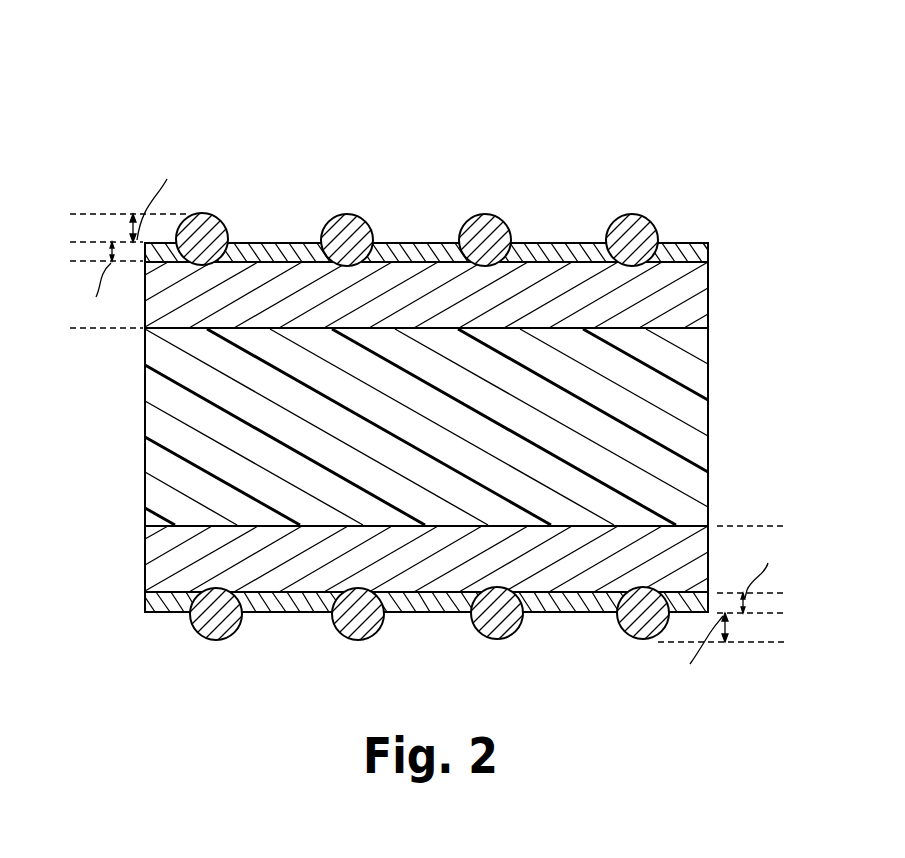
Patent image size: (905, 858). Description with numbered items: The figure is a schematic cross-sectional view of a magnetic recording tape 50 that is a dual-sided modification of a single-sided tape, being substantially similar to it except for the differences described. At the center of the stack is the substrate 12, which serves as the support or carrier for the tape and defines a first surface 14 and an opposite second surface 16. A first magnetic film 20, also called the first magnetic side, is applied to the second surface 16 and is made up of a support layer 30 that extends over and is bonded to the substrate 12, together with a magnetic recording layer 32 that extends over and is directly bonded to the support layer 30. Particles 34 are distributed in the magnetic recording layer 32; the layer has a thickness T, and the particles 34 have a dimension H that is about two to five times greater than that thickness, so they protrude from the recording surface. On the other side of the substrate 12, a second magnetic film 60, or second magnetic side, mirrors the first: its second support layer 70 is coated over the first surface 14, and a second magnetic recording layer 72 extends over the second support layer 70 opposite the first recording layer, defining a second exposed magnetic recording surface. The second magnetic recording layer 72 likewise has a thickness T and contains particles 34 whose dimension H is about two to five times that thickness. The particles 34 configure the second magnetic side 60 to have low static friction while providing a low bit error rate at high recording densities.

The magnetic recording tape 50 is at (443, 112).
The particles 34 is at (215, 213).
The magnetic recording layer 32 is at (697, 251).
The support layer 30 is at (697, 288).
The second surface 16 is at (672, 328).
The substrate 12 is at (697, 414).
The first surface 14 is at (187, 538).
The second support layer 70 is at (165, 567).
The second magnetic recording layer 72 is at (150, 601).
The magnetic film 20 is at (62, 214).
The second magnetic film 60 is at (795, 526).